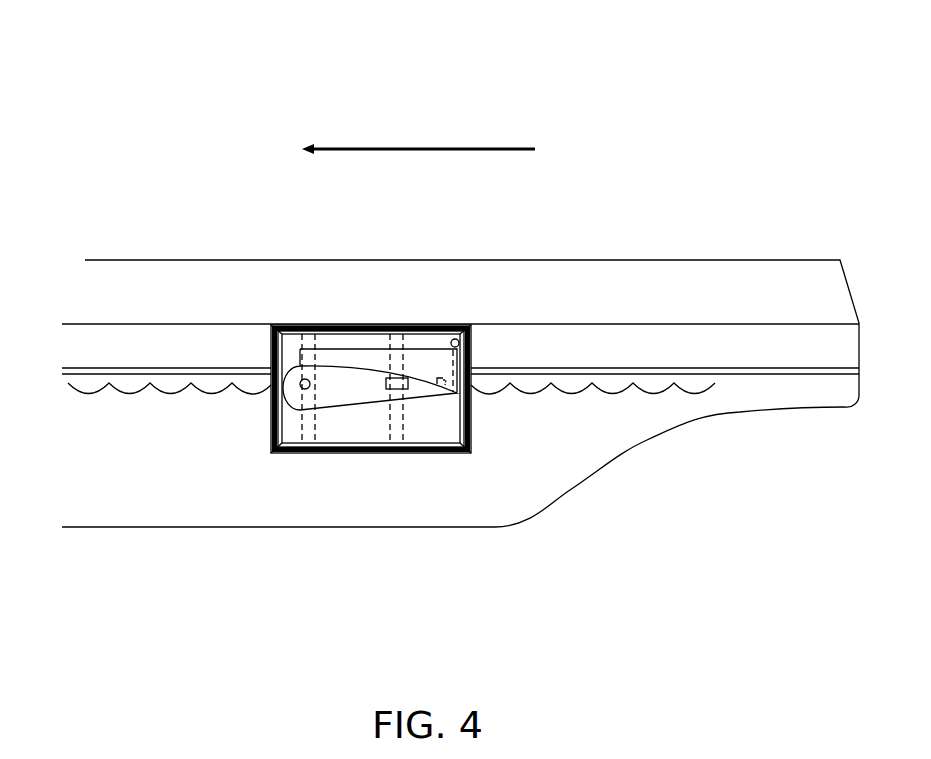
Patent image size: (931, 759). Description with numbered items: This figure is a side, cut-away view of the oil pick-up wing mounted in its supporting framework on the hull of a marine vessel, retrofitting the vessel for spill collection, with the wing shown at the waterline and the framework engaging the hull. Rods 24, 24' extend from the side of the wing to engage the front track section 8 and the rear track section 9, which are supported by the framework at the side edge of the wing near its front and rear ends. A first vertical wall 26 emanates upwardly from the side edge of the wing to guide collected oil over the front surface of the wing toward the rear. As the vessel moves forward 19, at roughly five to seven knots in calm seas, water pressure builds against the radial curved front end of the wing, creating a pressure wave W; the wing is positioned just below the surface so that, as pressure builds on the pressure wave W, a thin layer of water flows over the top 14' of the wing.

The forward movement 19 is at (425, 149).
The pressure wave W is at (255, 385).
The top of the wing 14' is at (370, 310).
The first vertical wall 26 is at (427, 360).
The rod 24 is at (237, 442).
The rod 24' is at (440, 445).
The front track section 8 is at (312, 425).
The rear track section 9 is at (397, 427).